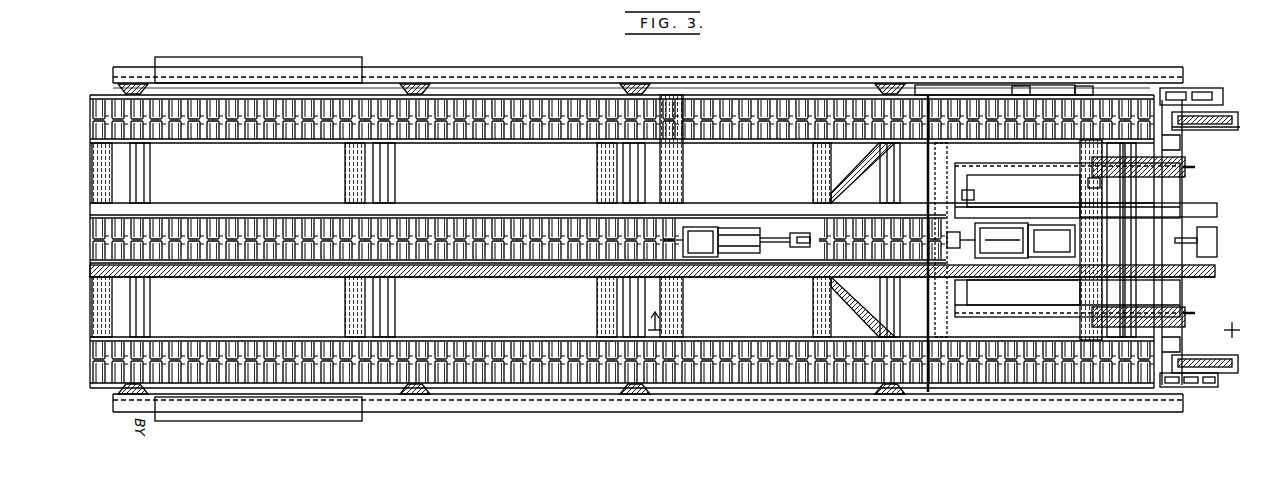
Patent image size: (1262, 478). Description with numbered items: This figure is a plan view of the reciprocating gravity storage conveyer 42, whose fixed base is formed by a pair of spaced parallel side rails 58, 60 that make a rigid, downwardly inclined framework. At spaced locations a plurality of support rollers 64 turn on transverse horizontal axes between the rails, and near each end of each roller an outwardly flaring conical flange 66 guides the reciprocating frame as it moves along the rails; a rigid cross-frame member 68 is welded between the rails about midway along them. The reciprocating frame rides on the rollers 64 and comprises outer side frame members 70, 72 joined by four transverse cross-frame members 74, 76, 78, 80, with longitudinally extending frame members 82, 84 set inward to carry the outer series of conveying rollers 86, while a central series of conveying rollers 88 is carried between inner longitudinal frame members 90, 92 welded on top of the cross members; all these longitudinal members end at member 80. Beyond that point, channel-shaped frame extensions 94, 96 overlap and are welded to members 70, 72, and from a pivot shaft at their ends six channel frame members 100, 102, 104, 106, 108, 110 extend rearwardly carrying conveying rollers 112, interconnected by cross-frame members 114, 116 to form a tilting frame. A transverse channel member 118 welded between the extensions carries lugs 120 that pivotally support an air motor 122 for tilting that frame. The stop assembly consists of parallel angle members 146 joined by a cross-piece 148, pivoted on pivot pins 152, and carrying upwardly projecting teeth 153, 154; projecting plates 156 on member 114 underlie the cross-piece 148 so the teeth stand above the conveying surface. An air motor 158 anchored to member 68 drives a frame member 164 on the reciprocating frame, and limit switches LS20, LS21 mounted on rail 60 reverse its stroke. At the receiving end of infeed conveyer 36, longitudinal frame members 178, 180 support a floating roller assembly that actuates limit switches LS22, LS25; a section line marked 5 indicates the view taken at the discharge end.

The infeed conveyer 36 is at (1223, 101).
The storage conveyer 42 is at (833, 70).
The side rail 58 is at (522, 406).
The side rail 60 is at (515, 71).
The support roller 64 is at (147, 189).
The conical flange 66 is at (120, 91).
The cross-frame member 68 is at (682, 302).
The outer side frame member 70 is at (707, 391).
The outer side frame member 72 is at (745, 95).
The cross-frame member 74 is at (117, 166).
The cross-frame member 76 is at (345, 172).
The cross-frame member 78 is at (598, 173).
The cross-frame member 80 is at (912, 302).
The longitudinally extending frame member 82 is at (529, 343).
The longitudinally extending frame member 84 is at (521, 136).
The conveying roller 86 is at (486, 138).
The central conveying roller 88 is at (495, 222).
The inner longitudinally extending frame member 90 is at (769, 270).
The inner longitudinally extending frame member 92 is at (756, 207).
The frame extension 94 is at (993, 391).
The frame extension 96 is at (937, 92).
The channel frame member 100 is at (1104, 390).
The channel frame member 102 is at (1022, 337).
The channel frame member 104 is at (1037, 270).
The channel frame member 106 is at (1017, 205).
The channel frame member 108 is at (997, 143).
The channel frame member 110 is at (978, 94).
The conveying roller 112 is at (976, 130).
The cross-frame member 114 is at (940, 332).
The cross-frame member 116 is at (1088, 183).
The channel member 118 is at (1086, 199).
The lug 120 is at (1051, 241).
The air motor 122 is at (987, 240).
The angle member 146 is at (1182, 176).
The cross-piece 148 is at (970, 202).
The pivot pin 152 is at (1090, 308).
The tooth 153 is at (1176, 143).
The tooth 154 is at (1195, 167).
The projecting plate 156 is at (965, 200).
The air motor 158 is at (730, 223).
The frame member 164 is at (820, 183).
The longitudinal frame member 178 is at (1197, 275).
The longitudinal frame member 180 is at (1205, 207).
The limit switch LS20 is at (1082, 85).
The limit switch LS21 is at (1023, 85).
The limit switch LS22 is at (1222, 267).
The limit switch LS25 is at (1214, 242).
The section line 5 is at (946, 315).